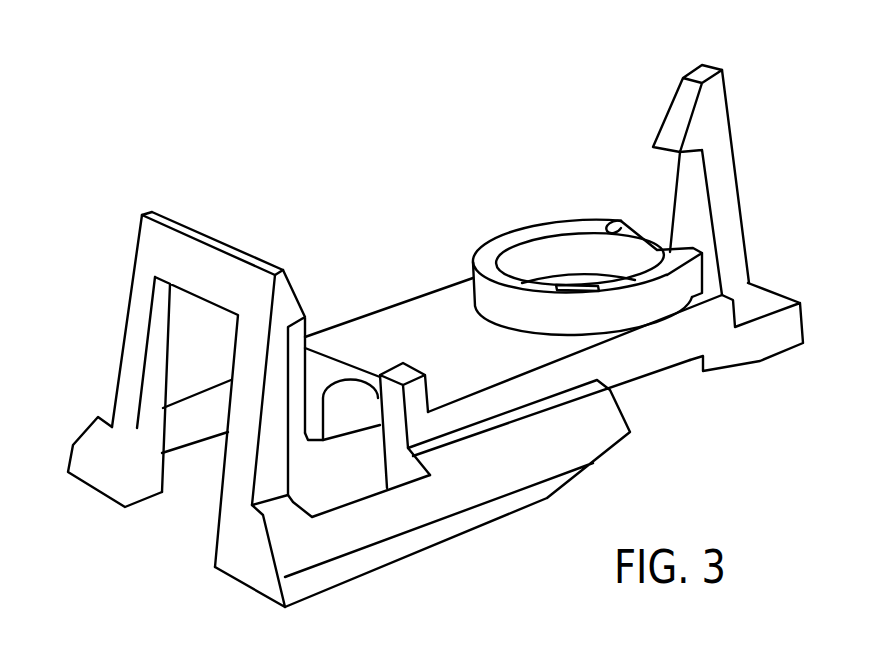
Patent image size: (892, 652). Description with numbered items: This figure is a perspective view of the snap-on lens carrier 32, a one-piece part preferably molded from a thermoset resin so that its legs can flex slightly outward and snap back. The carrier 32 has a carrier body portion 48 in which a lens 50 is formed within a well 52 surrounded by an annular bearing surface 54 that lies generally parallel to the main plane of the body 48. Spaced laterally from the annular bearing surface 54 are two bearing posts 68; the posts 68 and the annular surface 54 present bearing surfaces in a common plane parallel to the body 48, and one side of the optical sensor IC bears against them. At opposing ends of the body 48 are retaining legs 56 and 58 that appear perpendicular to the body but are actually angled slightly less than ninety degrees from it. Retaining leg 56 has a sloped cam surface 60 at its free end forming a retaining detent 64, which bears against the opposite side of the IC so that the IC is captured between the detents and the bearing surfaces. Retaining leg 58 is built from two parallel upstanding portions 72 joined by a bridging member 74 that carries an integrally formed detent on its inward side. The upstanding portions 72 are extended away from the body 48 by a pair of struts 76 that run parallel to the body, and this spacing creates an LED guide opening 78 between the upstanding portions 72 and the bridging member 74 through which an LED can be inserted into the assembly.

The lens carrier 32 is at (683, 430).
The carrier body portion 48 is at (438, 290).
The lens 50 is at (582, 290).
The well 52 is at (660, 302).
The annular bearing surface 54 is at (487, 250).
The retaining leg 56 is at (732, 155).
The retaining leg 58 is at (133, 293).
The sloped cam surface 60 is at (683, 102).
The retaining detent 64 is at (688, 157).
The bearing post 68 is at (402, 363).
The upstanding portion 72 is at (132, 363).
The bridging member 74 is at (220, 273).
The strut 76 is at (433, 502).
The LED guide opening 78 is at (186, 517).